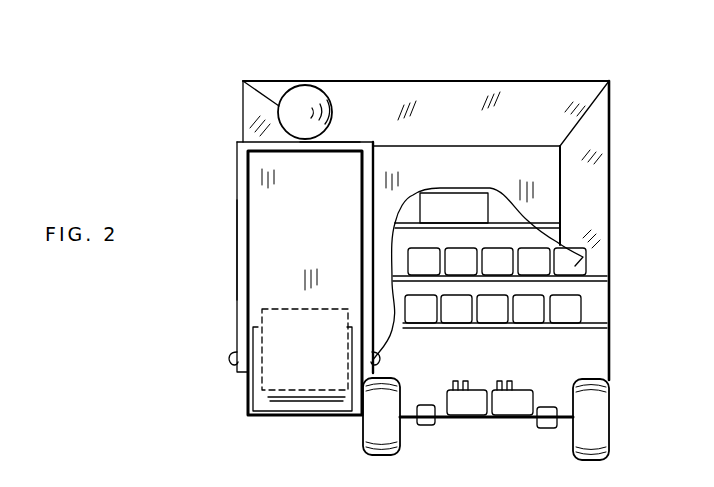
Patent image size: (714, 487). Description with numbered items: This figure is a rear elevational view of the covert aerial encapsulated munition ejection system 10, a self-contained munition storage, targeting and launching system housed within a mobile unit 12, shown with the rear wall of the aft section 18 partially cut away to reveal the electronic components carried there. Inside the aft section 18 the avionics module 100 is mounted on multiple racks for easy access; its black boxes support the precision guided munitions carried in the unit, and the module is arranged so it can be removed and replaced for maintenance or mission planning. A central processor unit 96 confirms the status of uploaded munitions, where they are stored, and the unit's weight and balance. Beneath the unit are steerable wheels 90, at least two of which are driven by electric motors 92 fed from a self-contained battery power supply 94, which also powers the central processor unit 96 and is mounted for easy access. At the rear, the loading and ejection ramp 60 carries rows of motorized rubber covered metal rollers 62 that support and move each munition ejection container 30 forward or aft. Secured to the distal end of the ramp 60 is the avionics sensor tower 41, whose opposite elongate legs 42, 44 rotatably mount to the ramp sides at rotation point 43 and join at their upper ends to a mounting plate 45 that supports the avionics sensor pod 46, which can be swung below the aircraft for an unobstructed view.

The covert aerial encapsulated munition ejection system 10 is at (459, 73).
The mobile unit 12 is at (570, 79).
The aft section 18 is at (592, 193).
The munition ejection container 30 is at (297, 313).
The avionics sensor tower 41 is at (232, 181).
The elongate leg 42 is at (237, 268).
The rotation point 43 is at (232, 358).
The elongate leg 44 is at (361, 219).
The mounting plate 45 is at (345, 142).
The avionics sensor pod 46 is at (306, 100).
The loading and ejection ramp 60 is at (252, 397).
The motorized rubber covered metal rollers 62 is at (306, 399).
The steerable wheels 90 is at (372, 432).
The electric motors 92 is at (418, 420).
The battery power supply 94 is at (478, 432).
The central processor unit 96 is at (440, 193).
The avionics module 100 is at (496, 262).